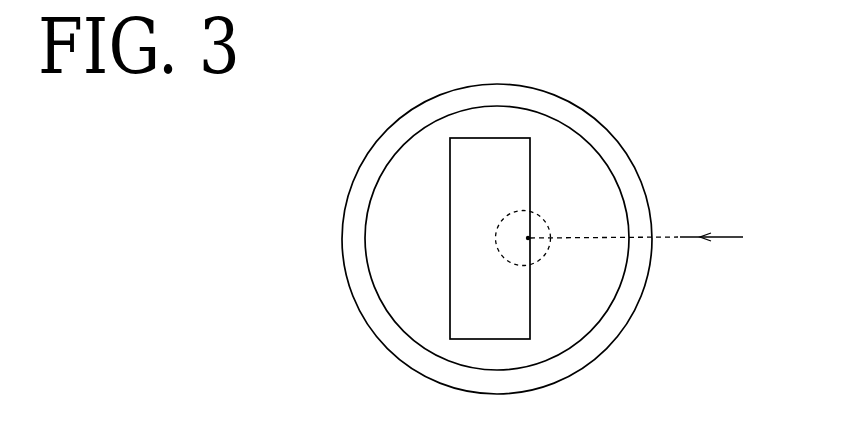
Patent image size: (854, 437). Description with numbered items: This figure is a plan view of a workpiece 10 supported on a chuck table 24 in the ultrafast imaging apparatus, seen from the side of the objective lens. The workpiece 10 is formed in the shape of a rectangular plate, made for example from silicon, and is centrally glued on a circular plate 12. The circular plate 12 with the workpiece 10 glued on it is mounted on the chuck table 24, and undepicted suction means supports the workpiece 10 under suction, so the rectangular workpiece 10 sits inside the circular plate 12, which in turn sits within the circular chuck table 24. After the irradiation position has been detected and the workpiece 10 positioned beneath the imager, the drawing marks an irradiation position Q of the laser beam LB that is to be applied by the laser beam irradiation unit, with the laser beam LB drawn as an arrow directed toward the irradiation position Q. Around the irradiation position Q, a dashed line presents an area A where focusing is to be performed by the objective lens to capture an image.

The chuck table 24 is at (628, 172).
The circular plate 12 is at (388, 190).
The workpiece 10 is at (458, 307).
The irradiation position Q is at (528, 238).
The area A is at (545, 262).
The laser beam LB is at (683, 239).